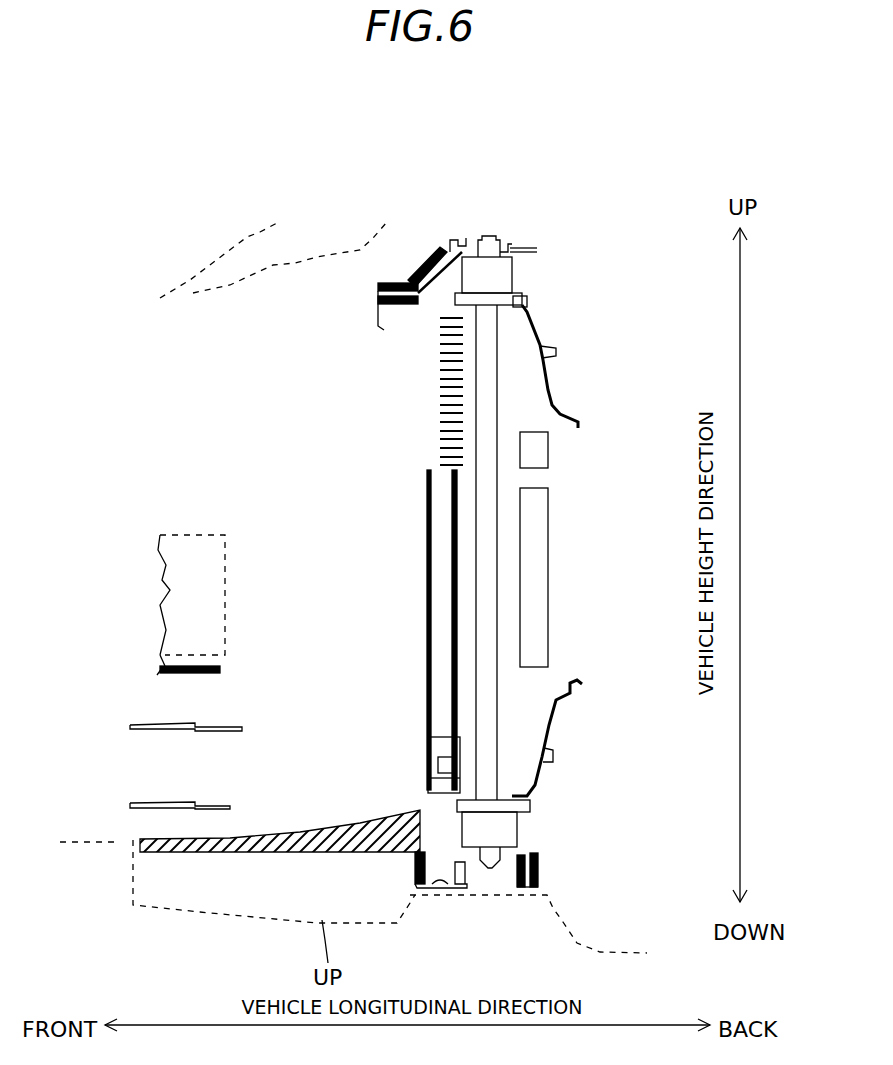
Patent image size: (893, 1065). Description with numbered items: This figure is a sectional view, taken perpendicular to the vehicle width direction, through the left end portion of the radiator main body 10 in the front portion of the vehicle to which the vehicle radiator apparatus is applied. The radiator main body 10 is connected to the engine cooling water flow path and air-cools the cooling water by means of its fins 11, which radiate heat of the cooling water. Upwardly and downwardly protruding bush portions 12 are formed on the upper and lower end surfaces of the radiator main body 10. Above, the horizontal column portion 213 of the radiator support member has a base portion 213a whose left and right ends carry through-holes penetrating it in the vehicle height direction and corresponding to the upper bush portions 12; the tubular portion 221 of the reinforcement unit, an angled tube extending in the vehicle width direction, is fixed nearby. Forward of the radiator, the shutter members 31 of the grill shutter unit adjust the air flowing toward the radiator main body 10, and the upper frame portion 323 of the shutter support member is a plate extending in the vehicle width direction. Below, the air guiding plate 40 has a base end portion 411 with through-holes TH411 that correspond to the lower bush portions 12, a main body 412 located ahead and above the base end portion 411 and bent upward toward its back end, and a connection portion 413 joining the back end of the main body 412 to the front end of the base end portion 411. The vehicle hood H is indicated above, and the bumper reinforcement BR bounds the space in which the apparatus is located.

The radiator main body 10 is at (539, 562).
The fins 11 is at (414, 555).
The bush portions 12 is at (486, 205).
The horizontal column portion 213 is at (437, 243).
The base portion 213a is at (539, 219).
The tubular portion 221 is at (404, 328).
The shutter members 31 is at (162, 778).
The upper frame portion 323 is at (123, 690).
The air guiding plate 40 is at (353, 860).
The base end portion 411 is at (571, 870).
The through-holes TH411 is at (562, 825).
The main body 412 is at (390, 824).
The connection portion 413 is at (405, 884).
The vehicle hood H is at (273, 234).
The bumper reinforcement BR is at (151, 604).